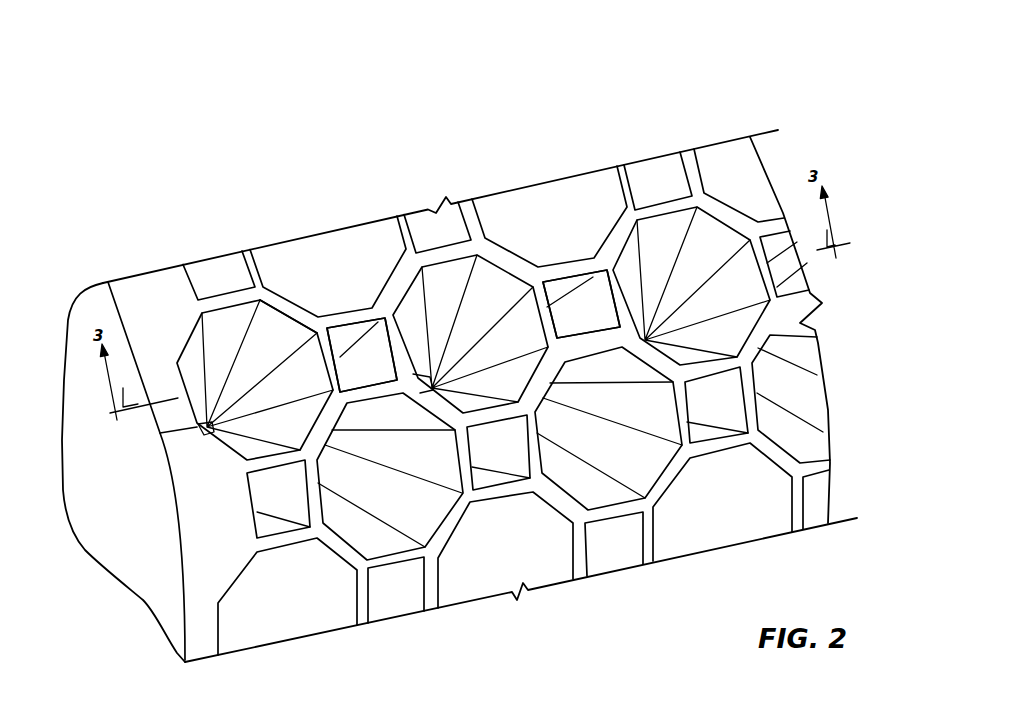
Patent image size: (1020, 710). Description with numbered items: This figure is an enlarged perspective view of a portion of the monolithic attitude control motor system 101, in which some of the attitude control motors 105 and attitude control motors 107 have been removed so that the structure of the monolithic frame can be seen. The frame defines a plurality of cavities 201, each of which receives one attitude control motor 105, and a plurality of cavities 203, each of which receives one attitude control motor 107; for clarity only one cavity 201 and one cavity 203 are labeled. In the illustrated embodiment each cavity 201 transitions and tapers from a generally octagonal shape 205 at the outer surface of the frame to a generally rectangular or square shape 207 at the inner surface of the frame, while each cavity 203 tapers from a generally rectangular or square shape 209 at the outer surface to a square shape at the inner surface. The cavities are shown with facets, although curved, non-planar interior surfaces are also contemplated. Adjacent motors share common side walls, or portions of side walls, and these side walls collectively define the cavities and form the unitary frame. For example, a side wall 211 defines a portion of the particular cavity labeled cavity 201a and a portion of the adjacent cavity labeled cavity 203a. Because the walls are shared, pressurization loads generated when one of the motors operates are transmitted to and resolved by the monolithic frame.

The monolithic attitude control motor system 101 is at (724, 86).
The attitude control motor 105 is at (557, 212).
The attitude control motor 107 is at (432, 212).
The cavity 201 is at (213, 366).
The cavity 201a is at (478, 349).
The cavity 203 is at (363, 353).
The cavity 203a is at (570, 323).
The generally octagonal shape 205 is at (283, 318).
The generally rectangular or square shape 207 is at (160, 440).
The generally rectangular or square shape 209 is at (366, 342).
The side wall 211 is at (608, 295).